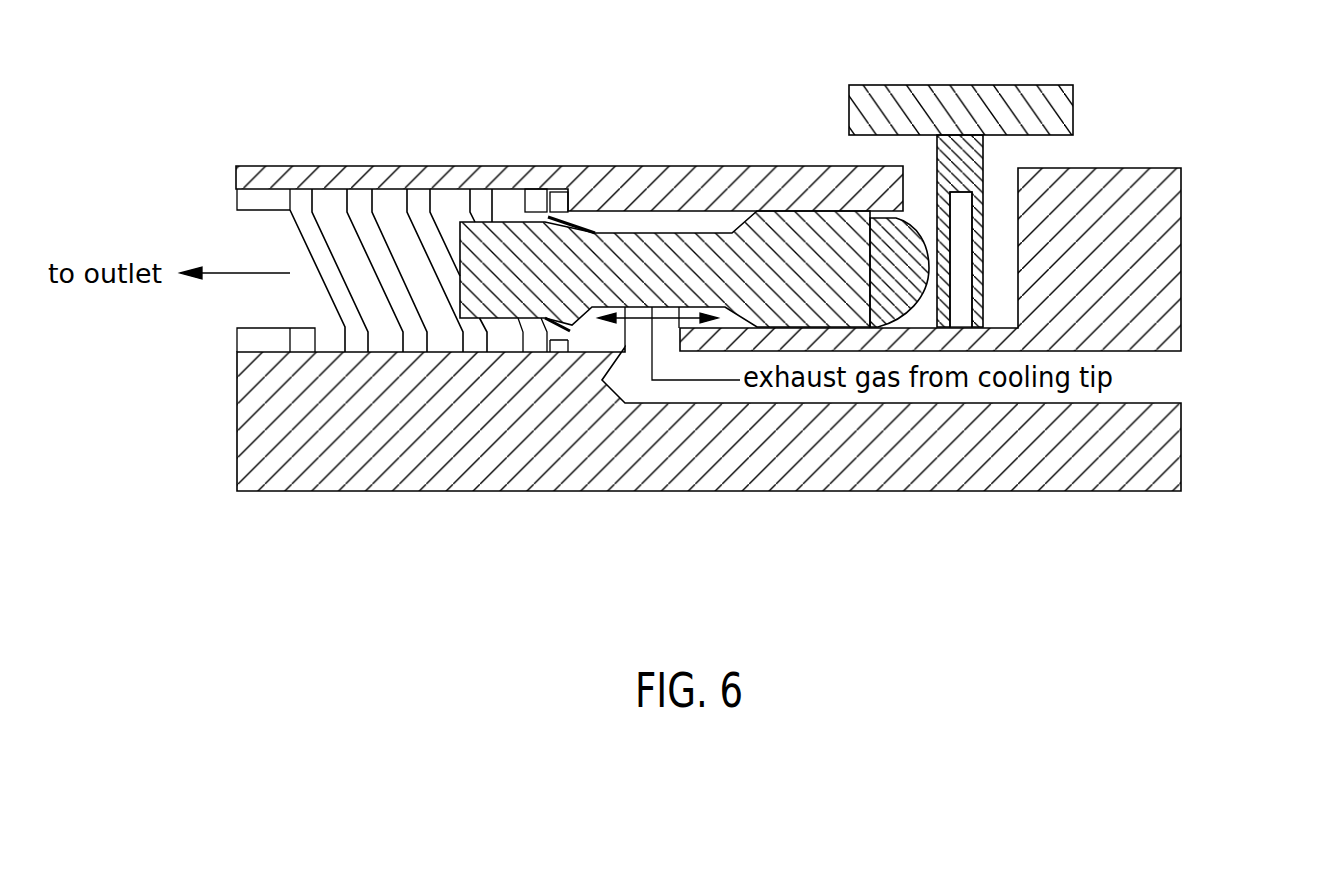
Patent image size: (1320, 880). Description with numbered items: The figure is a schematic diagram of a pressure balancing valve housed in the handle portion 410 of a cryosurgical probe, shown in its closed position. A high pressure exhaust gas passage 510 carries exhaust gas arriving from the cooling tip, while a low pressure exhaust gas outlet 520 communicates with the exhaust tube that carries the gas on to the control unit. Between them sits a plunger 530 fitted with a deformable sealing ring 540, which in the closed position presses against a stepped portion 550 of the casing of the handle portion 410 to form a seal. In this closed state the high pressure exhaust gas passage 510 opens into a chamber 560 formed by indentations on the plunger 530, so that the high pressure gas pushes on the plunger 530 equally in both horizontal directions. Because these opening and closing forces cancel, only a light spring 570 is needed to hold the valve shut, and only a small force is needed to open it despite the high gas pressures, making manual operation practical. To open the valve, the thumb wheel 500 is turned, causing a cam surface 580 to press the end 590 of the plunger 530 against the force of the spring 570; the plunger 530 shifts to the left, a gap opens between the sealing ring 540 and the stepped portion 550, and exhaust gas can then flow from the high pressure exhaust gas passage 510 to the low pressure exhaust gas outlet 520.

The handle portion 410 is at (665, 491).
The thumb wheel 500 is at (1073, 102).
The high pressure exhaust gas passage 510 is at (1183, 400).
The low pressure exhaust gas outlet 520 is at (233, 311).
The plunger 530 is at (763, 233).
The deformable sealing ring 540 is at (547, 212).
The stepped portion 550 is at (581, 195).
The chamber 560 is at (653, 307).
The spring 570 is at (360, 207).
The cam surface 580 is at (963, 192).
The end of the plunger 590 is at (912, 225).